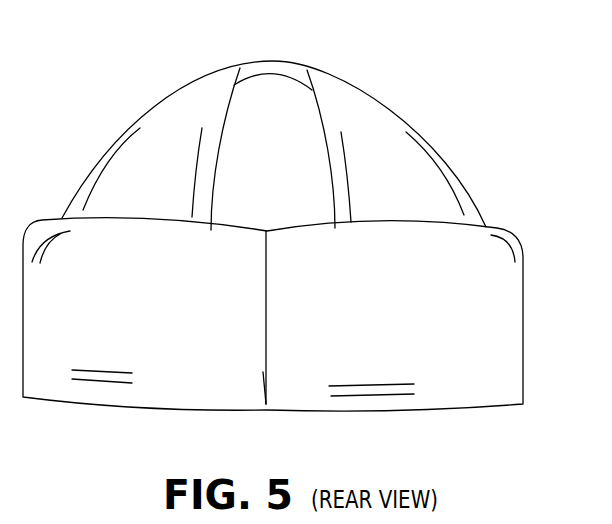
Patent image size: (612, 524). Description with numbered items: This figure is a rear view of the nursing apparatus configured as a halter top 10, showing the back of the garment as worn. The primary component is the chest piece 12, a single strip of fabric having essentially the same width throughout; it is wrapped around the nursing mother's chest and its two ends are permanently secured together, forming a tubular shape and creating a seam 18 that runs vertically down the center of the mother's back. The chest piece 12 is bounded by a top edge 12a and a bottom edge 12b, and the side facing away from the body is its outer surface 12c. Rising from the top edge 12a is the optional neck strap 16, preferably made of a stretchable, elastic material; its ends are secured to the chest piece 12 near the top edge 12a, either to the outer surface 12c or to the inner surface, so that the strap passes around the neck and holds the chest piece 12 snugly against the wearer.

The halter top 10 is at (144, 76).
The chest piece 12 is at (503, 222).
The top edge 12a is at (266, 231).
The bottom edge 12b is at (72, 404).
The outer surface 12c is at (453, 390).
The neck strap 16 is at (351, 103).
The seam 18 is at (263, 372).